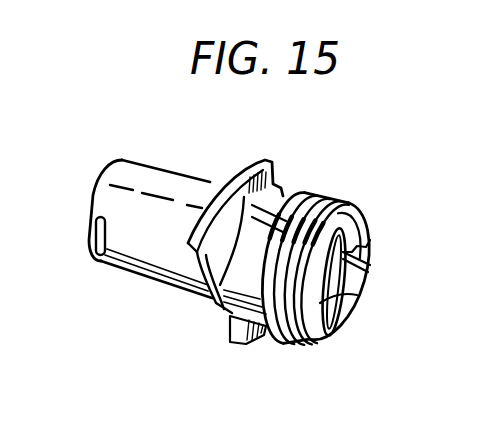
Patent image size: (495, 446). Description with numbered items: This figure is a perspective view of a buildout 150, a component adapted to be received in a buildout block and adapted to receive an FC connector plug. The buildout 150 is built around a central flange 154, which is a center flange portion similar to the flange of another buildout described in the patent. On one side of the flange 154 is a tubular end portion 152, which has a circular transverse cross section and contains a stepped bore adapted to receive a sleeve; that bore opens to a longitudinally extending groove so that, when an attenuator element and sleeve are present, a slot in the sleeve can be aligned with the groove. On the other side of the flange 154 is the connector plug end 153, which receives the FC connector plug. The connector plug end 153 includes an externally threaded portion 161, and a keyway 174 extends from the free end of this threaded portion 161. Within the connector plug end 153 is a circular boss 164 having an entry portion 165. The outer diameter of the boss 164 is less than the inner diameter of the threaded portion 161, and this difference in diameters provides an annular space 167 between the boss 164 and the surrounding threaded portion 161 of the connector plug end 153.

The buildout 150 is at (279, 121).
The tubular end portion 152 is at (153, 170).
The connector plug end 153 is at (315, 348).
The flange 154 is at (215, 303).
The externally threaded portion 161 is at (338, 198).
The circular boss 164 is at (349, 304).
The entry portion 165 is at (352, 292).
The annular space 167 is at (333, 318).
The keyway 174 is at (363, 250).